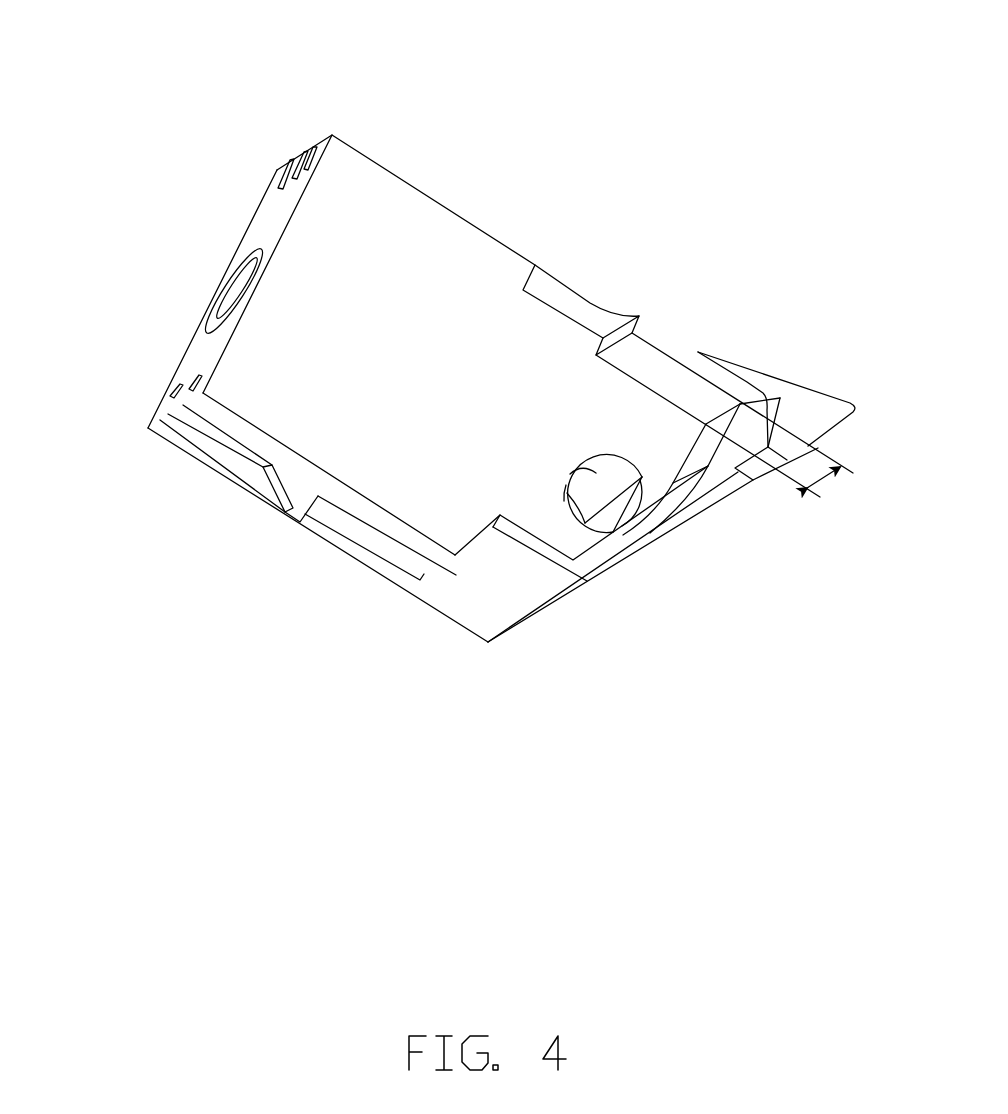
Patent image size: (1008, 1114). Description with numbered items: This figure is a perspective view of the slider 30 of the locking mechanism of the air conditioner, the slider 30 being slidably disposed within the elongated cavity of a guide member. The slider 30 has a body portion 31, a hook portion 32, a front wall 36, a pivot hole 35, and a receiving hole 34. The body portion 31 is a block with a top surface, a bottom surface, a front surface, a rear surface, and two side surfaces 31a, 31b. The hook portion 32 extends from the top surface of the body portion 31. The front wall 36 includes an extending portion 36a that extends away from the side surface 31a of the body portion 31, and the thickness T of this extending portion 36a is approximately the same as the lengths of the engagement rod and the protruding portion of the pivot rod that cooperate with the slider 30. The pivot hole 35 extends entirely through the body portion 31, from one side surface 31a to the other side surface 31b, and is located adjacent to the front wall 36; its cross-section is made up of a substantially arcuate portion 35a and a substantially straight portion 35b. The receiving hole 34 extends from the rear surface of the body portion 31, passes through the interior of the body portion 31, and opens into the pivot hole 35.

The slider 30 is at (461, 365).
The body portion 31 is at (250, 210).
The side surface 31a is at (472, 262).
The side surface 31b is at (178, 452).
The hook portion 32 is at (818, 405).
The receiving hole 34 is at (240, 297).
The pivot hole 35 is at (609, 478).
The substantially arcuate portion 35a is at (565, 485).
The substantially straight portion 35b is at (613, 512).
The front wall 36 is at (563, 604).
The extending portion 36a is at (650, 533).
The thickness T is at (828, 487).